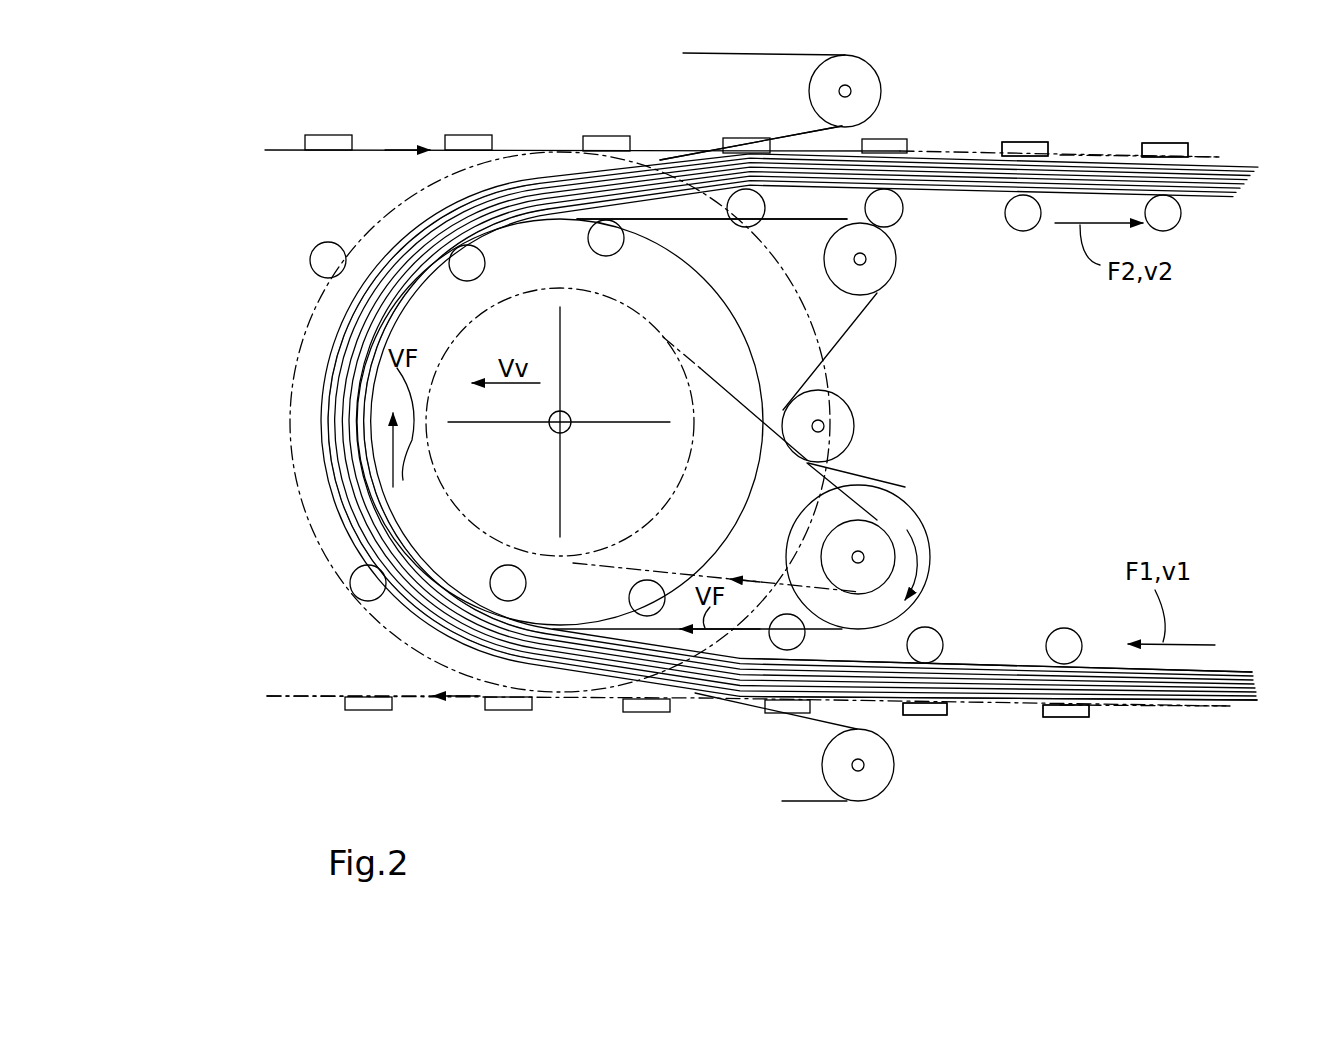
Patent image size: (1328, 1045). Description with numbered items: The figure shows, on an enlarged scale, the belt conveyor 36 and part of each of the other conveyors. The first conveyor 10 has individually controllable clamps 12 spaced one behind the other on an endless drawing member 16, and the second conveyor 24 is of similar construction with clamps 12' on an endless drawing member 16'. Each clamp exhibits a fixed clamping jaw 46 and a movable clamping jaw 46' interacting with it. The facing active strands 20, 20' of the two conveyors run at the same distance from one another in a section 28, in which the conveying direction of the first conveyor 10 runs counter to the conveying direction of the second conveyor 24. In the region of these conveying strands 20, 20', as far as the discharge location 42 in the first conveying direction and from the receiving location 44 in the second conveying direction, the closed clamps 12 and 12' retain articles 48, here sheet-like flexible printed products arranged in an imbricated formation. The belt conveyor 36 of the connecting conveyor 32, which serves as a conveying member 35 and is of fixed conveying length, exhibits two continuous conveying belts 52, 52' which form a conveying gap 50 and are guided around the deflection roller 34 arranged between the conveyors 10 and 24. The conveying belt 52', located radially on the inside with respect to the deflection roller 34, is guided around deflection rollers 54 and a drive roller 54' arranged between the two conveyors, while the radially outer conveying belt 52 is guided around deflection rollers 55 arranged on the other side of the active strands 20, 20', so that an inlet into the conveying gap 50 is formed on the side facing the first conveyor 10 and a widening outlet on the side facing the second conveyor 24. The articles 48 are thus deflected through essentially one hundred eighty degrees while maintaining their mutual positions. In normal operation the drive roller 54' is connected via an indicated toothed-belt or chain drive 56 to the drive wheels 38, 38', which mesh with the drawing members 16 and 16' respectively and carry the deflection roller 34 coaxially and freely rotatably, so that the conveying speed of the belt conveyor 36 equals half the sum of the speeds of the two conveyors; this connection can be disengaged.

The first conveyor 10 is at (290, 698).
The clamps 12 is at (1117, 747).
The clamps 12' is at (1151, 119).
The drawing member 16 is at (1156, 732).
The drawing member 16' is at (1140, 114).
The active strand 20 is at (955, 757).
The active strand 20' is at (995, 108).
The second conveyor 24 is at (278, 127).
The section 28 is at (223, 663).
The connecting conveyor 32 is at (282, 417).
The deflection roller 34 is at (690, 317).
The conveying member 35 is at (317, 474).
The belt conveyor 36 is at (330, 489).
The drive wheel 38 is at (748, 428).
The drive wheel 38' is at (789, 427).
The discharge location 42 is at (740, 710).
The receiving location 44 is at (687, 137).
The fixed clamping jaw 46 is at (1135, 438).
The movable clamping jaw 46' is at (1136, 429).
The articles 48 is at (1215, 668).
The conveying gap 50 is at (675, 205).
The conveying belt 52 is at (752, 80).
The conveying belt 52' is at (880, 351).
The deflection rollers 54 is at (881, 342).
The drive roller 54' is at (896, 542).
The deflection rollers 55 is at (840, 72).
The toothed-belt or chain drive 56 is at (740, 403).